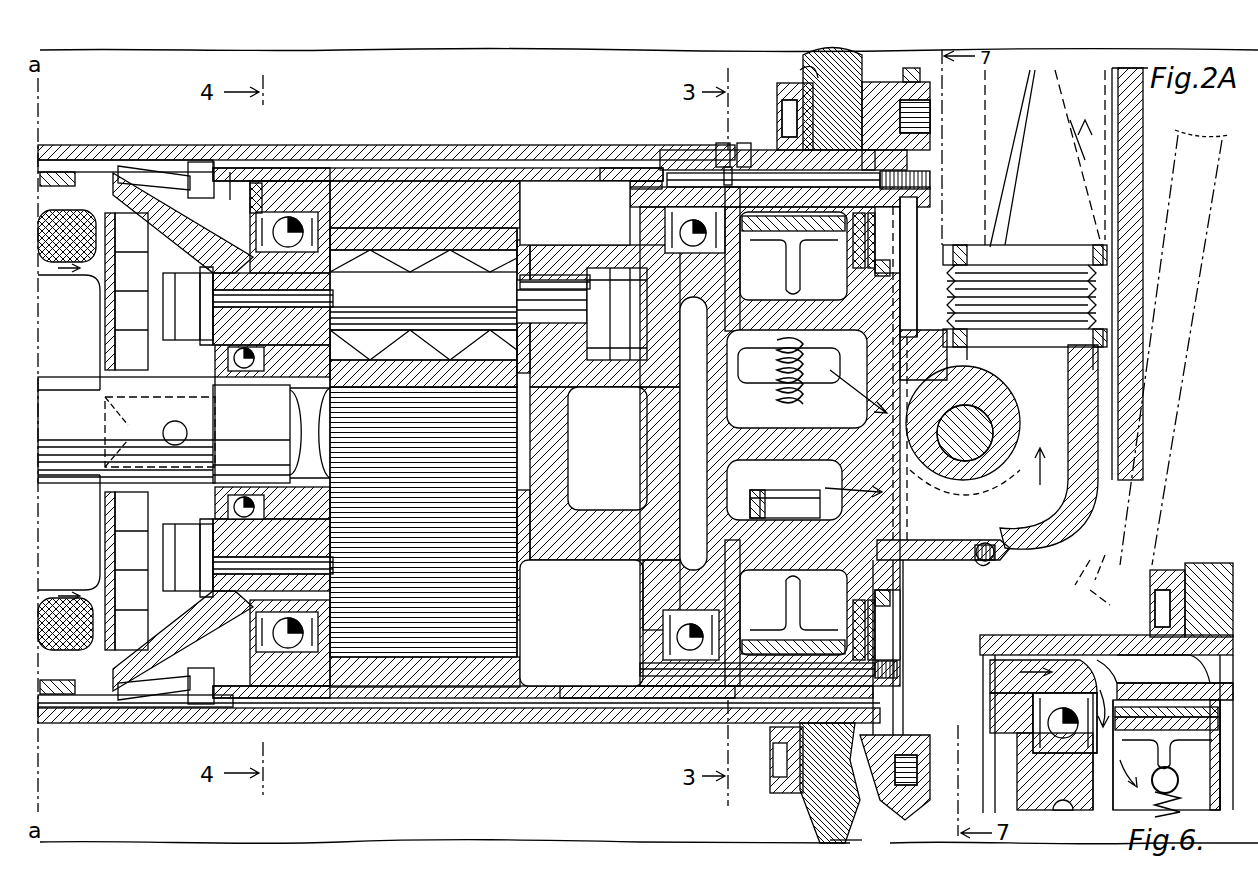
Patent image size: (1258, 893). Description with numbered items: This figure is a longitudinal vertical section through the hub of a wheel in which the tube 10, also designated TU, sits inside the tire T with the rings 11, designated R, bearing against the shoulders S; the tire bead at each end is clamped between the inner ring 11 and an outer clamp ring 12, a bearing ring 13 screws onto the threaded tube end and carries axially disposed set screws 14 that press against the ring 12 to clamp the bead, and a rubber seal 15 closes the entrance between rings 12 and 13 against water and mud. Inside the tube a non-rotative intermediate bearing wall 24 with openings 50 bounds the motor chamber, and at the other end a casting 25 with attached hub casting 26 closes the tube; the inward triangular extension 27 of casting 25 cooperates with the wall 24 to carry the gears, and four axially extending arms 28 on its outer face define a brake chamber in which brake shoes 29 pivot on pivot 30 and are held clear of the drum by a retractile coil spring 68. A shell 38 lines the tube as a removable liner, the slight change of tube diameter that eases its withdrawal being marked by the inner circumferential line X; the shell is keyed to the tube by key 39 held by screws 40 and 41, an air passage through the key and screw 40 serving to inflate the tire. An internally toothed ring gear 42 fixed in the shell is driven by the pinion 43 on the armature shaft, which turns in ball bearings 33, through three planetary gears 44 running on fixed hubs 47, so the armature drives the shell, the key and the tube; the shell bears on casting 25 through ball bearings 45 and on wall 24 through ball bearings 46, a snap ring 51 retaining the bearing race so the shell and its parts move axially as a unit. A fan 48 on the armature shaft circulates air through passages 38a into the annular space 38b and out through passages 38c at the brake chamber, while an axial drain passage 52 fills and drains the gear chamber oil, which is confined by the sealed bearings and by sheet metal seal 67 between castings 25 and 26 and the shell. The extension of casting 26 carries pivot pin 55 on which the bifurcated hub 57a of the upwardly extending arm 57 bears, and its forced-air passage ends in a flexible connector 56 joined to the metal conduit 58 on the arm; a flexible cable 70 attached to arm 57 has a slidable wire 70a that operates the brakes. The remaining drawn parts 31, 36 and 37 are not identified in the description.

In FIG. 2A, the tube 10 is at (392, 146).
In FIG. 6, the tube 10 is at (1106, 645).
In FIG. 2A, the inner ring 11 is at (778, 92).
In FIG. 6, the inner ring 11 is at (1150, 580).
In FIG. 2A, the outer clamp ring 12 is at (868, 95).
In FIG. 2A, the bearing ring 13 is at (932, 100).
In FIG. 2A, the set screws 14 is at (932, 118).
In FIG. 2A, the rubber seal 15 is at (912, 68).
In FIG. 2A, the intermediate bearing wall 24 is at (165, 180).
In FIG. 2A, the casting 25 is at (659, 390).
In FIG. 2A, the hub casting 26 is at (981, 495).
In FIG. 2A, the inward triangular extension 27 is at (568, 408).
In FIG. 2A, the axially extending arms 28 is at (748, 300).
In FIG. 6, the axially extending arms 28 is at (1040, 810).
In FIG. 2A, the brake shoes 29 is at (815, 236).
In FIG. 6, the brake shoes 29 is at (1138, 735).
In FIG. 2A, the pivot 30 is at (748, 505).
In FIG. 2A, the fan guard bracket 31 is at (58, 336).
In FIG. 2A, the ball bearings 33 is at (230, 500).
In FIG. 2A, the rubber cushion 36 is at (58, 218).
In FIG. 2A, the end plate 37 is at (55, 168).
In FIG. 2A, the shell 38 is at (558, 170).
In FIG. 6, the shell 38 is at (1058, 660).
In FIG. 2A, the air passages 38a is at (255, 166).
In FIG. 2A, the annular space 38b is at (632, 170).
In FIG. 6, the annular space 38b is at (998, 652).
In FIG. 6, the passages 38c is at (1094, 668).
In FIG. 2A, the key 39 is at (690, 160).
In FIG. 2A, the screw 40 is at (730, 143).
In FIG. 2A, the screw 41 is at (900, 170).
In FIG. 2A, the internally toothed ring gear 42 is at (486, 186).
In FIG. 2A, the pinion 43 is at (312, 430).
In FIG. 2A, the transmission planetary gears 44 is at (520, 245).
In FIG. 2A, the ball bearings 45 is at (665, 222).
In FIG. 6, the ball bearings 45 is at (1040, 712).
In FIG. 2A, the ball bearings 46 is at (330, 210).
In FIG. 2A, the fixed hubs 47 is at (423, 442).
In FIG. 2A, the fan 48 is at (128, 214).
In FIG. 2A, the openings 50 is at (253, 248).
In FIG. 2A, the snap ring 51 is at (250, 200).
In FIG. 2A, the axial drain passage 52 is at (745, 676).
In FIG. 2A, the pivot pin 55 is at (985, 466).
In FIG. 2A, the flexible conduit connector 56 is at (1070, 322).
In FIG. 2A, the upwardly extending arm 57 is at (1145, 150).
In FIG. 2A, the bifurcated hub 57a is at (1010, 372).
In FIG. 2A, the metal conduit 58 is at (1020, 155).
In FIG. 2A, the sheet metal seal 67 is at (875, 240).
In FIG. 6, the sheet metal seal 67 is at (1215, 738).
In FIG. 2A, the retractile coil spring 68 is at (778, 368).
In FIG. 6, the retractile coil spring 68 is at (1152, 803).
In FIG. 2A, the flexible cable 70 is at (997, 551).
In FIG. 2A, the slidable wire 70a is at (988, 565).
In FIG. 2A, the inner circumferential line X is at (225, 172).
In FIG. 2A, the rings R is at (790, 808).
In FIG. 2A, the shoulders S is at (758, 745).
In FIG. 6, the shoulders S is at (1152, 614).
In FIG. 2A, the tire T is at (854, 844).
In FIG. 6, the tire T is at (1200, 565).
In FIG. 2A, the tube TU is at (558, 704).